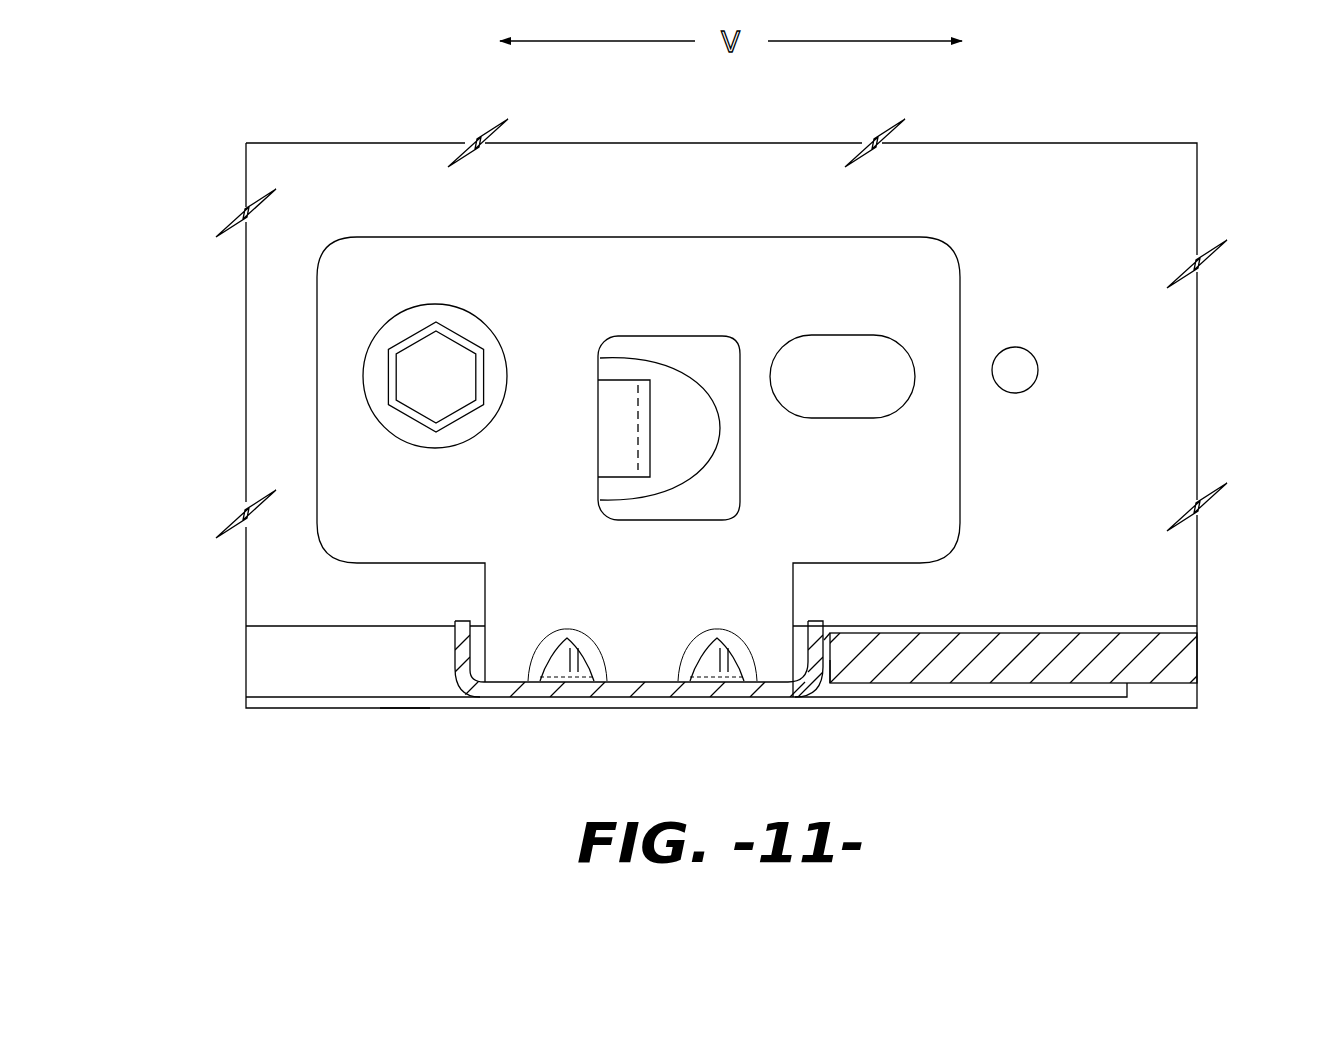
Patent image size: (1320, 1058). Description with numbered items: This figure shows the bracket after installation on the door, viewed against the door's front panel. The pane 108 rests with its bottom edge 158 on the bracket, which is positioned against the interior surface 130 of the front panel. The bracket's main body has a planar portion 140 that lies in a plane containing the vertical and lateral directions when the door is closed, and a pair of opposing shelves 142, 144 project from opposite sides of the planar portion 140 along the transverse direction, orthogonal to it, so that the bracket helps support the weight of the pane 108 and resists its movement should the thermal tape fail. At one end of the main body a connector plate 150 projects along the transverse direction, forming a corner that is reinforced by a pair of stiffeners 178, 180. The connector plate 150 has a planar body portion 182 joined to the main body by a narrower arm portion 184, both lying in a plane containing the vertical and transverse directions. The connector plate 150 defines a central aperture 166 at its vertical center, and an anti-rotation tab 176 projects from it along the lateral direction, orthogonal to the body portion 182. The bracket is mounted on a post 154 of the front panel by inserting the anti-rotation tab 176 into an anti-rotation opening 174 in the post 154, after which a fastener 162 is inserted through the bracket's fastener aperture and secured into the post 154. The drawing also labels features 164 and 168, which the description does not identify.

The pane 108 is at (1183, 655).
The interior surface 130 is at (358, 697).
The planar portion 140 is at (576, 665).
The shelf 142 is at (815, 622).
The shelf 144 is at (460, 622).
The connector plate 150 is at (922, 488).
The post 154 is at (1080, 182).
The bottom edge 158 is at (830, 660).
The fastener 162 is at (415, 376).
The base wall 164 is at (403, 703).
The central aperture 166 is at (736, 507).
The slot 168 is at (827, 358).
The anti-rotation opening 174 is at (683, 402).
The anti-rotation tab 176 is at (648, 400).
The stiffener 178 is at (558, 661).
The stiffener 180 is at (707, 660).
The planar body portion 182 is at (578, 306).
The arm portion 184 is at (668, 586).